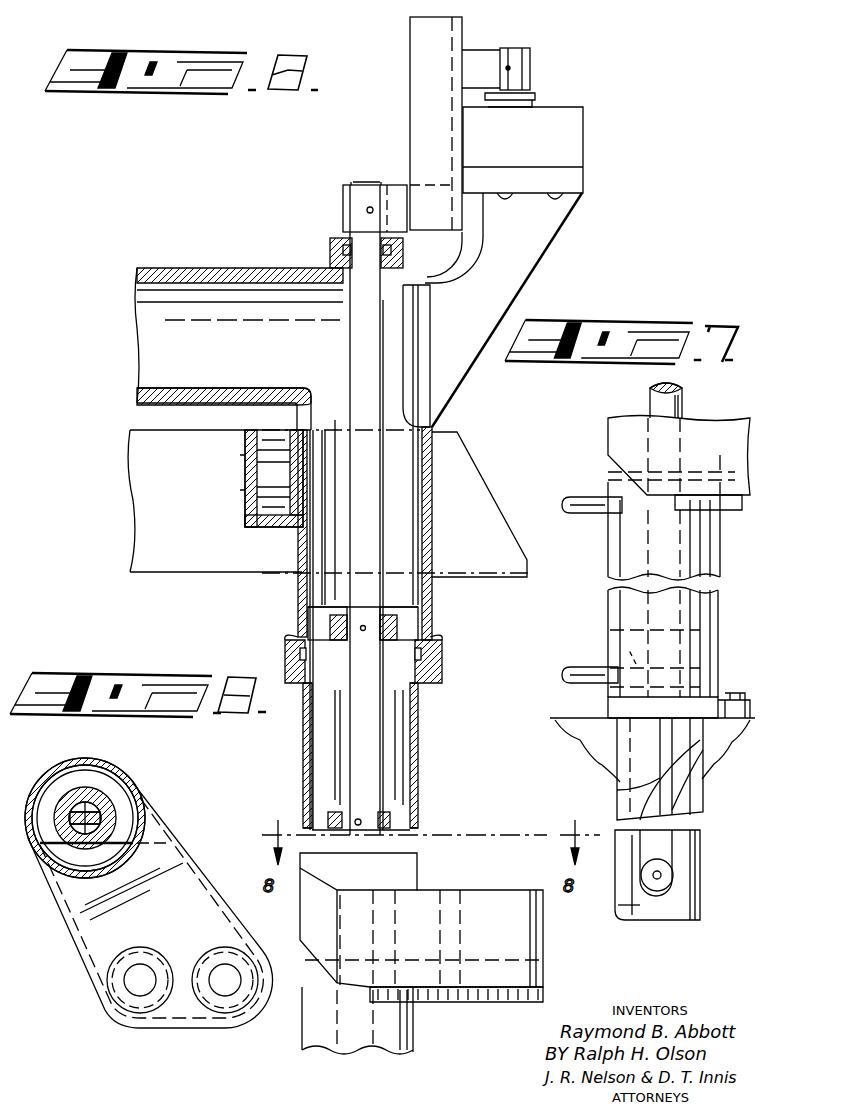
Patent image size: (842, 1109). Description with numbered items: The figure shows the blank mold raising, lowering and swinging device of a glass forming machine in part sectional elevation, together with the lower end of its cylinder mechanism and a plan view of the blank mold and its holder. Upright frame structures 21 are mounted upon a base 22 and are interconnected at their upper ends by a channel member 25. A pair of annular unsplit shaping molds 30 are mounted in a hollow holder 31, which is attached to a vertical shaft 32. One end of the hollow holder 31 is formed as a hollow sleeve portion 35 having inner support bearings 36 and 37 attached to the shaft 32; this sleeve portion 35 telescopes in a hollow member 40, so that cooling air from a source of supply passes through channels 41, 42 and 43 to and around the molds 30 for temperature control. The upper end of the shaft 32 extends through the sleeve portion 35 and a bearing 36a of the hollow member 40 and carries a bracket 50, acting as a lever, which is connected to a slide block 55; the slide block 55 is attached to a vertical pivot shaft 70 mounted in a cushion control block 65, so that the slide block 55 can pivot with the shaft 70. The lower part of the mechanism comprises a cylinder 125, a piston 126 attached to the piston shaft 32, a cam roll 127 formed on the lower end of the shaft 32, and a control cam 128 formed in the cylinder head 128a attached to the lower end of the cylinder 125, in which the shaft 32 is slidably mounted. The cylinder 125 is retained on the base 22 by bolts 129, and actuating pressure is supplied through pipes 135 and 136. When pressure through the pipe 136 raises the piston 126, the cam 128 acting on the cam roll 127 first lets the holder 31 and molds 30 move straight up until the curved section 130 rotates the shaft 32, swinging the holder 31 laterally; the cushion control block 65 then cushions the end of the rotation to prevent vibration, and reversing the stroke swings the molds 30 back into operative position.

In FIG. 6, the upright frame structure 21 is at (169, 526).
In FIG. 7, the base 22 is at (575, 718).
In FIG. 6, the channel member 25 is at (265, 527).
In FIG. 8, the annular unsplit shaping mold 30 is at (205, 960).
In FIG. 6, the hollow holder 31 is at (543, 946).
In FIG. 7, the hollow holder 31 is at (608, 440).
In FIG. 8, the hollow holder 31 is at (92, 943).
In FIG. 6, the vertical shaft 32 is at (372, 183).
In FIG. 7, the vertical shaft 32 is at (650, 394).
In FIG. 8, the vertical shaft 32 is at (95, 812).
In FIG. 6, the hollow sleeve portion 35 is at (418, 742).
In FIG. 8, the hollow sleeve portion 35 is at (130, 820).
In FIG. 6, the inner support bearing 36 is at (418, 618).
In FIG. 6, the bearing 36a is at (330, 252).
In FIG. 6, the inner support bearing 37 is at (390, 820).
In FIG. 6, the hollow member 40 is at (432, 547).
In FIG. 6, the channel 41 is at (243, 362).
In FIG. 6, the channel 42 is at (405, 508).
In FIG. 6, the channel 43 is at (395, 712).
In FIG. 8, the channel 43 is at (92, 870).
In FIG. 6, the bracket 50 is at (343, 205).
In FIG. 6, the slide block 55 is at (443, 86).
In FIG. 6, the cushion control block 65 is at (561, 137).
In FIG. 6, the vertical pivot shaft 70 is at (512, 50).
In FIG. 6, the cylinder 125 is at (310, 1028).
In FIG. 7, the cylinder 125 is at (608, 552).
In FIG. 7, the piston 126 is at (636, 664).
In FIG. 7, the cam roll 127 is at (675, 882).
In FIG. 7, the control cam 128 is at (672, 850).
In FIG. 7, the cylinder head 128a is at (640, 905).
In FIG. 7, the bolt 129 is at (735, 693).
In FIG. 7, the curved section 130 is at (692, 765).
In FIG. 7, the pipe 135 is at (590, 497).
In FIG. 7, the pipe 136 is at (590, 667).